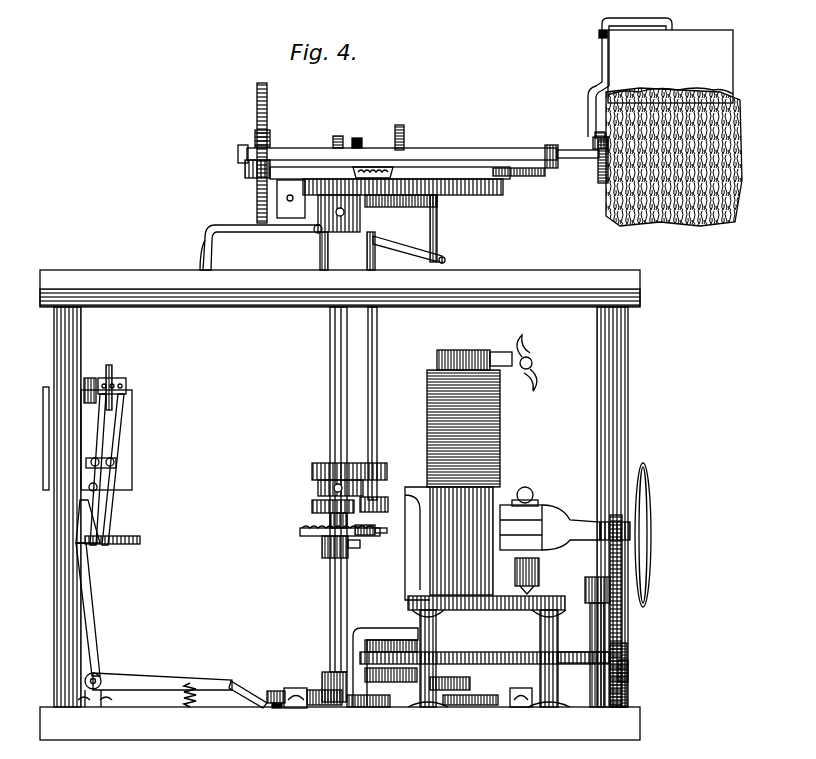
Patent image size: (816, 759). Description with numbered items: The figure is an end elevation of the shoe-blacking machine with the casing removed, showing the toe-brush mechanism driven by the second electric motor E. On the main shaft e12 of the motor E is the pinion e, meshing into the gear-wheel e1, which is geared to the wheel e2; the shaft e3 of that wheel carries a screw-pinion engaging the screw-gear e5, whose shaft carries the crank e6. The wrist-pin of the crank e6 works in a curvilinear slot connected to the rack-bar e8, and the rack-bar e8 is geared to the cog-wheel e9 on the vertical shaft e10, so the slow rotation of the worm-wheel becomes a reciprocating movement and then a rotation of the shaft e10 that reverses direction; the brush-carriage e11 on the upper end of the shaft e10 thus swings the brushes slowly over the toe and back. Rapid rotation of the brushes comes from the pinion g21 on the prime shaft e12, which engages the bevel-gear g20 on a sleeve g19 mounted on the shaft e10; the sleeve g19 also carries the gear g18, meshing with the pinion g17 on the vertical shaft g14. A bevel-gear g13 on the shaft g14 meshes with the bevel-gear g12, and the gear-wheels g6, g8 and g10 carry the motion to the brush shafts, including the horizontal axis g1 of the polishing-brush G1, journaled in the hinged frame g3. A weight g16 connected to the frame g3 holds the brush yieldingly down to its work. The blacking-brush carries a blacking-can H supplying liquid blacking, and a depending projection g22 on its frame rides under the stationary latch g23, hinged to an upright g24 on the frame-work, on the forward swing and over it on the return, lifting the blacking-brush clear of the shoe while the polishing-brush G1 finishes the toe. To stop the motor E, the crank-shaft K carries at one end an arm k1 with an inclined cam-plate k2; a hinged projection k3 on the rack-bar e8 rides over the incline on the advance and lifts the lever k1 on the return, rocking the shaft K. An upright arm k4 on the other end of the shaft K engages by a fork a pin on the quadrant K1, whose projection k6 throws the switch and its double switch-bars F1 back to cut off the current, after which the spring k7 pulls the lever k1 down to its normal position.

The double switch-bars F1 is at (125, 432).
The quadrant K1 is at (118, 535).
The projection k6 is at (140, 540).
The upright arm k4 is at (90, 620).
The crank-shaft K is at (100, 675).
The arm k1 is at (143, 682).
The inclined cam-plate k2 is at (237, 680).
The spring k7 is at (188, 708).
The hinged projection k3 is at (277, 710).
The rack-bar e8 is at (272, 690).
The cog-wheel e9 is at (316, 689).
The vertical shaft e10 is at (330, 375).
The vertical shaft g14 is at (377, 418).
The pinion g17 is at (388, 500).
The gear g18 is at (312, 506).
The sleeve g19 is at (318, 527).
The bevel-gear g20 is at (325, 540).
The pinion g21 is at (363, 537).
The main shaft e12 is at (370, 550).
The electric motor E is at (502, 472).
The screw-gear e5 is at (488, 652).
The crank e6 is at (468, 684).
The shaft e3 is at (562, 654).
The gear-wheel e1 is at (612, 598).
The pinion e is at (616, 526).
The wheel e2 is at (627, 688).
The hinged frame g3 is at (462, 148).
The gear-wheel g6 is at (257, 100).
The gear-wheel g8 is at (247, 170).
The weight g16 is at (282, 198).
The gear-wheel g10 is at (340, 136).
The bevel-gear g12 is at (362, 142).
The bevel-gear g13 is at (405, 150).
The brush-carriage e11 is at (437, 200).
The stationary latch g23 is at (272, 232).
The upright g24 is at (320, 262).
The depending projection g22 is at (437, 243).
The horizontal axis g1 is at (598, 165).
The blacking-can H is at (670, 66).
The polishing-brush G1 is at (688, 224).